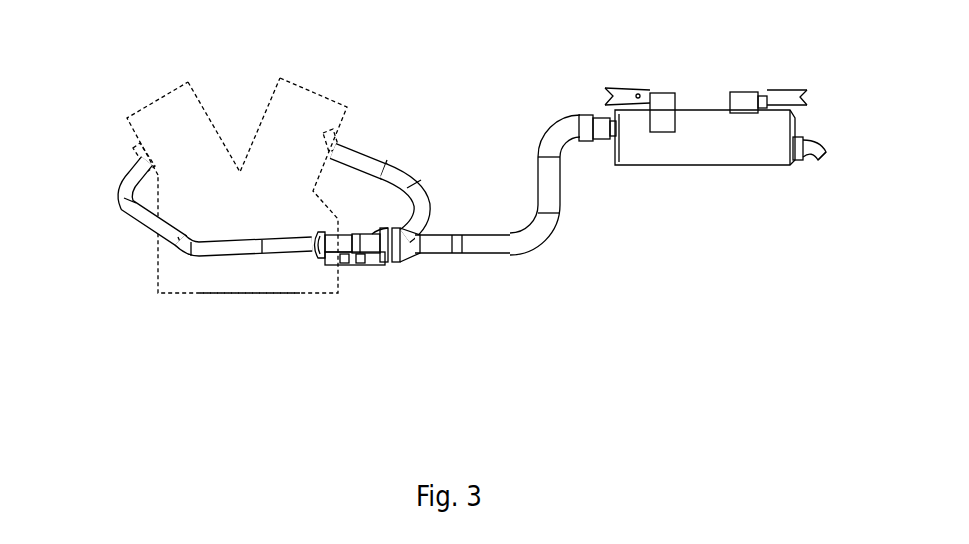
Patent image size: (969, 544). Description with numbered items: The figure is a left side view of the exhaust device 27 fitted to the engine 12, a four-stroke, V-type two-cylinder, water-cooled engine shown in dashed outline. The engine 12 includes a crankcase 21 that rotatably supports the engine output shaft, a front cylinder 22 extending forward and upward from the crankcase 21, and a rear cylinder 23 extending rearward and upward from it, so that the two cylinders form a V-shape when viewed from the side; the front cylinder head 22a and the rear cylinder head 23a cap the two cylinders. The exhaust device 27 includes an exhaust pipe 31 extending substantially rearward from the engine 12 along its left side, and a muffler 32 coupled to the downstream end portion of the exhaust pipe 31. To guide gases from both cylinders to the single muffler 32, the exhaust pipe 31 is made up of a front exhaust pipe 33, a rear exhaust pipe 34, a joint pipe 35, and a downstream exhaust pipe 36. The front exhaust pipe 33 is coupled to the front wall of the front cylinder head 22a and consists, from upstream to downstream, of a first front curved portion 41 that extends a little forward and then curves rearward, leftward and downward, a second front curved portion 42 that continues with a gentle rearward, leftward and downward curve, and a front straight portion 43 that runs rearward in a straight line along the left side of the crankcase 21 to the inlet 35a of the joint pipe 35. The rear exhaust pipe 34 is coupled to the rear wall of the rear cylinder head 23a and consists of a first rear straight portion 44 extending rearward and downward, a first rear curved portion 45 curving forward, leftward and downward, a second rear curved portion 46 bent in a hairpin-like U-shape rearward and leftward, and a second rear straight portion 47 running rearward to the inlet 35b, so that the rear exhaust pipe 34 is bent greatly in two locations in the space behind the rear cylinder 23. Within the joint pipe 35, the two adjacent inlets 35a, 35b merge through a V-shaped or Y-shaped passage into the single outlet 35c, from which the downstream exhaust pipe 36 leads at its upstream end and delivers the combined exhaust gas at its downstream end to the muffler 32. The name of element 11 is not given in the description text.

The engine 11 is at (235, 155).
The engine 12 is at (210, 118).
The crankcase 21 is at (240, 280).
The front cylinder 22 is at (168, 102).
The front cylinder head 22a is at (150, 143).
The rear cylinder 23 is at (302, 103).
The rear cylinder head 23a is at (260, 117).
The exhaust device 27 is at (620, 168).
The exhaust pipe 31 is at (574, 172).
The muffler 32 is at (710, 147).
The front exhaust pipe 33 is at (198, 258).
The rear exhaust pipe 34 is at (409, 149).
The joint pipe 35 is at (379, 270).
The inlet 35a is at (380, 233).
The inlet 35b is at (387, 266).
The outlet 35c is at (432, 255).
The downstream exhaust pipe 36 is at (488, 246).
The first front curved portion 41 is at (123, 187).
The second front curved portion 42 is at (145, 222).
The front straight portion 43 is at (337, 264).
The first rear straight portion 44 is at (355, 148).
The first rear curved portion 45 is at (432, 210).
The second rear curved portion 46 is at (333, 260).
The second rear straight portion 47 is at (350, 264).